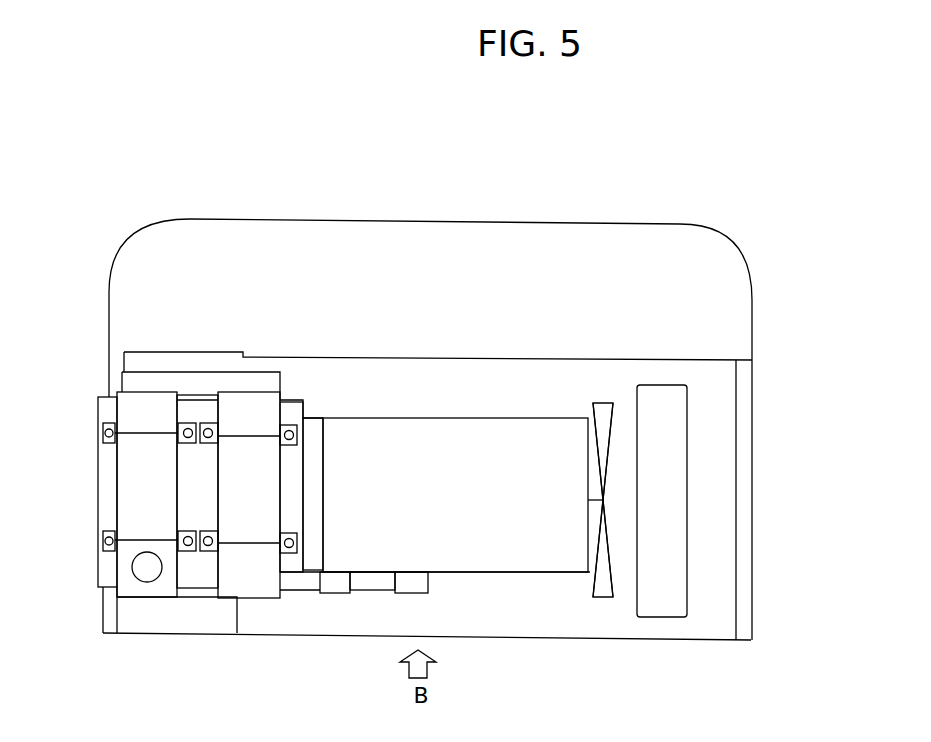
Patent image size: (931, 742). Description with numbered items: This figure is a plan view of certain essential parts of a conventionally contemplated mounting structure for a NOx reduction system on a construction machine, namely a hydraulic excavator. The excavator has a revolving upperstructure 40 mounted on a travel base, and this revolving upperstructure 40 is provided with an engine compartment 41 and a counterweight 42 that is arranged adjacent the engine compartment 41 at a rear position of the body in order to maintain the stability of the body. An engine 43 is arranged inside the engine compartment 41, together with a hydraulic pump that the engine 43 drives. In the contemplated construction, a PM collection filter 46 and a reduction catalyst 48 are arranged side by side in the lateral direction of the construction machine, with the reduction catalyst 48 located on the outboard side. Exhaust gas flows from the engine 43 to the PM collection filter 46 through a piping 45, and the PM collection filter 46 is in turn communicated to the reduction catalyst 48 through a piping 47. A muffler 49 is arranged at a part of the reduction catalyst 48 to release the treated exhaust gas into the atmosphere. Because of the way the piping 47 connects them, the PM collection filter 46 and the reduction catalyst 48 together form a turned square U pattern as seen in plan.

The revolving upperstructure 40 is at (752, 423).
The engine compartment 41 is at (530, 617).
The counterweight 42 is at (450, 222).
The engine 43 is at (388, 540).
The piping 45 is at (307, 582).
The PM collection filter 46 is at (237, 572).
The piping 47 is at (182, 378).
The reduction catalyst 48 is at (135, 490).
The muffler 49 is at (143, 565).